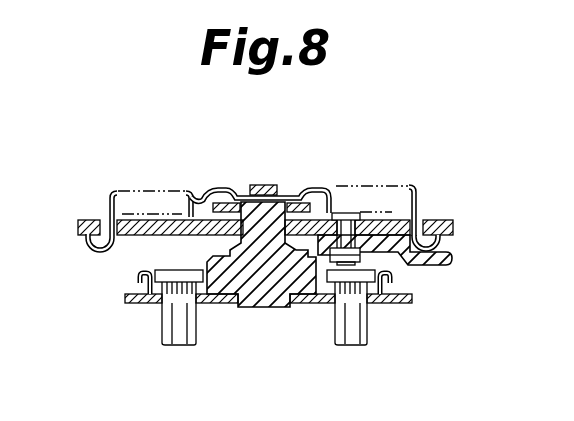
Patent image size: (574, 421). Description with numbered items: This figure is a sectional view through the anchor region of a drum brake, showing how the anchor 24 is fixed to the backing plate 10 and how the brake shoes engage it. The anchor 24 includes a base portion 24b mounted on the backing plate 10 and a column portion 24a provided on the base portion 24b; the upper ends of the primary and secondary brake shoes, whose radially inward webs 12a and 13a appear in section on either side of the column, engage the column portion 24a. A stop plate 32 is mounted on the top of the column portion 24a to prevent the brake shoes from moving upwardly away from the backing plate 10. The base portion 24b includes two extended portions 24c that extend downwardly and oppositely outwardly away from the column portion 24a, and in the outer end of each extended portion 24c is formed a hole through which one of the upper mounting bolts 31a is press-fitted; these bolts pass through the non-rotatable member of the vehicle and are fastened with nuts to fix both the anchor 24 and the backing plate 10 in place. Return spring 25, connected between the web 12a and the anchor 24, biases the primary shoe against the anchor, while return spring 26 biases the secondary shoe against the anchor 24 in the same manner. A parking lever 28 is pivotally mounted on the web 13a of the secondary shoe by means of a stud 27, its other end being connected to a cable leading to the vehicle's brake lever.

The backing plate 10 is at (407, 301).
The web 12a is at (82, 221).
The web 13a is at (433, 220).
The anchor 24 is at (260, 310).
The column portion 24a is at (278, 206).
The base portion 24b is at (327, 290).
The extended portions 24c is at (148, 294).
The return spring 25 is at (140, 192).
The return spring 26 is at (392, 197).
The stud 27 is at (382, 258).
The parking lever 28 is at (455, 258).
The upper mounting bolts 31a is at (180, 340).
The stop plate 32 is at (300, 203).